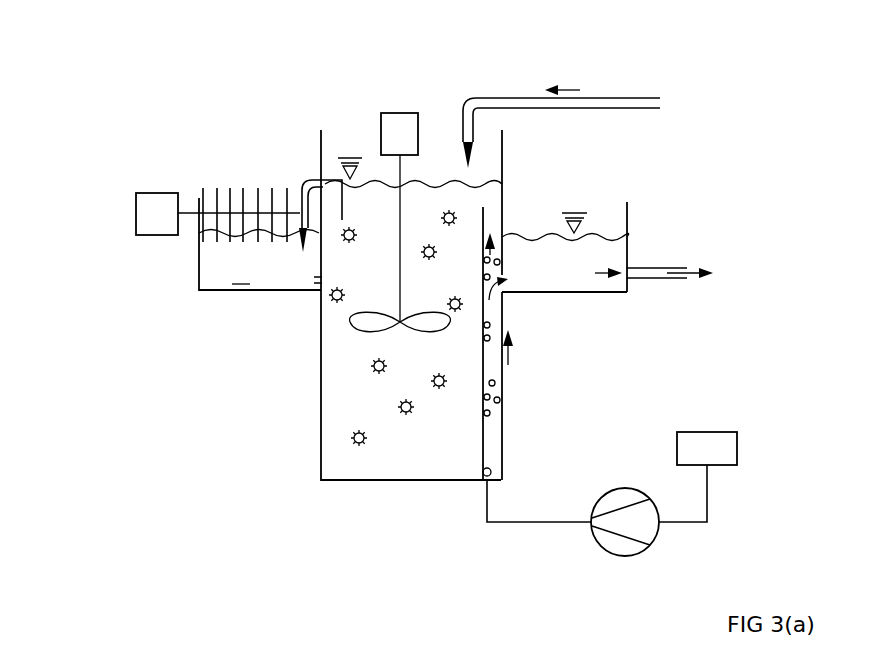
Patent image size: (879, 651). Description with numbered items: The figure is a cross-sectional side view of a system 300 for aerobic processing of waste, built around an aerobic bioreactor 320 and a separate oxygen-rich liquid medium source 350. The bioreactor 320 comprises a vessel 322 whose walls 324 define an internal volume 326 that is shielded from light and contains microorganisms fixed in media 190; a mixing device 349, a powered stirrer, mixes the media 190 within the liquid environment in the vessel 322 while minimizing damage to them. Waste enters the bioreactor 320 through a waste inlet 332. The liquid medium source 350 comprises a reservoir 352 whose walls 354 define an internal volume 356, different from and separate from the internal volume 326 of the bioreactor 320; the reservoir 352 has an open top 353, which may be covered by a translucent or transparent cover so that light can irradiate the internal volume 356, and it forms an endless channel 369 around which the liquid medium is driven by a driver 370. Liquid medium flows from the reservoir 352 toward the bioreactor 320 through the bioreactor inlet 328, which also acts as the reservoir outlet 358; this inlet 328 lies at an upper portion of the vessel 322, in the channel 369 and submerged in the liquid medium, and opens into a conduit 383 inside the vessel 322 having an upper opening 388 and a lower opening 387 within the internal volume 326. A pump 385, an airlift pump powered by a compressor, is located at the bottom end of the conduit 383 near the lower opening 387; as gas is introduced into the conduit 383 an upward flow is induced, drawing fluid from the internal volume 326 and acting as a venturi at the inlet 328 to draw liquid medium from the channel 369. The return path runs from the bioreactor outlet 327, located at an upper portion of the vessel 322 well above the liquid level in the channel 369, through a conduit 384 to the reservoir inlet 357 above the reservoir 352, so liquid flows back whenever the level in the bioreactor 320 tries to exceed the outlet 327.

The system 300 is at (592, 70).
The aerobic bioreactor 320 is at (300, 470).
The vessel 322 is at (320, 365).
The walls 324 is at (320, 305).
The internal volume 326 is at (456, 466).
The media 190 is at (371, 370).
The mixing device 349 is at (405, 178).
The bioreactor outlet 327 is at (330, 176).
The conduit 384 is at (308, 178).
The oxygen-rich liquid medium source 350 is at (185, 282).
The driver 370 is at (191, 185).
The reservoir inlet 357 is at (298, 210).
The waste inlet 332 is at (480, 92).
The upper opening 388 is at (493, 222).
The conduit 383 is at (502, 377).
The bioreactor inlet 328 is at (502, 297).
The reservoir outlet 358 is at (542, 347).
The lower opening 387 is at (501, 475).
The pump 385 is at (643, 550).
The reservoir 352 is at (632, 233).
The internal volume 356 is at (590, 285).
The channel 369 is at (522, 250).
The open top 353 is at (598, 205).
The walls 354 is at (630, 285).